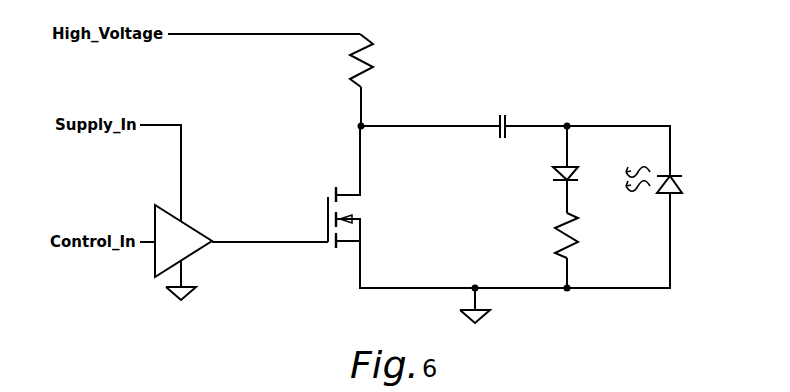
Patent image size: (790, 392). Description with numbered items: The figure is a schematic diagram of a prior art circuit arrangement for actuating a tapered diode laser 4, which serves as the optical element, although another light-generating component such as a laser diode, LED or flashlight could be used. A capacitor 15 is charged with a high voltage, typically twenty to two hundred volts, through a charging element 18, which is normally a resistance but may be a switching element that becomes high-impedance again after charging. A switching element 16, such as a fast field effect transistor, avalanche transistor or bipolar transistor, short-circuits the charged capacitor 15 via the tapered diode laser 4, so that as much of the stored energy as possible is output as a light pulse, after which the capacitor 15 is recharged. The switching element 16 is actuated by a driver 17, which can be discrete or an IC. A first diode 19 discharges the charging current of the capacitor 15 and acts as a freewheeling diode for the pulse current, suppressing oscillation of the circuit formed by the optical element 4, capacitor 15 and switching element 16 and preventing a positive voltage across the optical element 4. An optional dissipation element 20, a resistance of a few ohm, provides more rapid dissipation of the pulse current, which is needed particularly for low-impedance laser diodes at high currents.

The tapered diode laser 4 is at (669, 184).
The capacitor 15 is at (495, 108).
The switching element 16 is at (366, 187).
The driver 17 is at (189, 233).
The charging element 18 is at (386, 60).
The first diode 19 is at (547, 172).
The dissipation element 20 is at (546, 235).